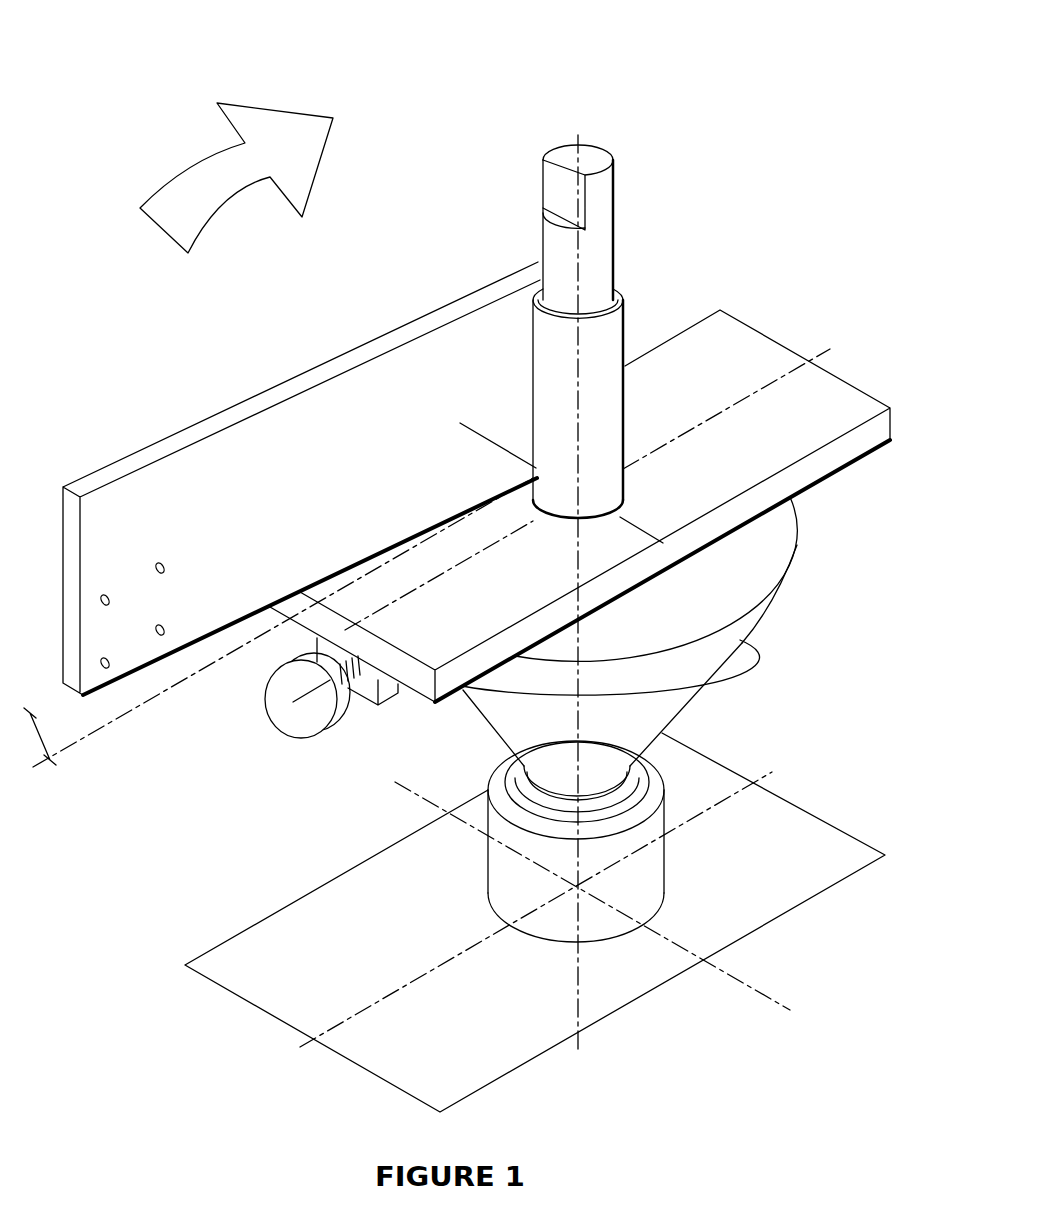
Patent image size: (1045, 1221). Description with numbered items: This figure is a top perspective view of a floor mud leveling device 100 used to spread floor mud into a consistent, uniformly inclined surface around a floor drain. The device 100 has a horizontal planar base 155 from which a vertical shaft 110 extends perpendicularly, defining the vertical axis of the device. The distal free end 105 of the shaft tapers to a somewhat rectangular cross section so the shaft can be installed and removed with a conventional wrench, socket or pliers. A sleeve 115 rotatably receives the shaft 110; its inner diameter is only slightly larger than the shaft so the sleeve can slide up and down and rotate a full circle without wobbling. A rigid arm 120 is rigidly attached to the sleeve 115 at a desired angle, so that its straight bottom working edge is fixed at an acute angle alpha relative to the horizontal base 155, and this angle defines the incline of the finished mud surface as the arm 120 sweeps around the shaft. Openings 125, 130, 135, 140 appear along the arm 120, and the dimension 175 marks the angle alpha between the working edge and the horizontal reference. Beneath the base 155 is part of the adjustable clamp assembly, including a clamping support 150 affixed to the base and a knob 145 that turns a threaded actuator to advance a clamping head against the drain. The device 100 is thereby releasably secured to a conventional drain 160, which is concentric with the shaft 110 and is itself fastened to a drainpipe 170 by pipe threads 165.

The floor mud leveling device 100 is at (667, 205).
The distal free end of the shaft 105 is at (545, 181).
The vertical shaft 110 is at (613, 253).
The sleeve 115 is at (612, 323).
The arm 120 is at (333, 437).
The mounting hole 125 is at (163, 563).
The mounting hole 130 is at (107, 595).
The mounting hole 135 is at (107, 669).
The mounting hole 140 is at (162, 636).
The knob 145 is at (293, 732).
The clamping support 150 is at (392, 705).
The horizontal planar base 155 is at (840, 408).
The drain 160 is at (793, 548).
The pipe threads 165 is at (645, 758).
The drainpipe 170 is at (658, 888).
The angle alpha 175 is at (278, 628).